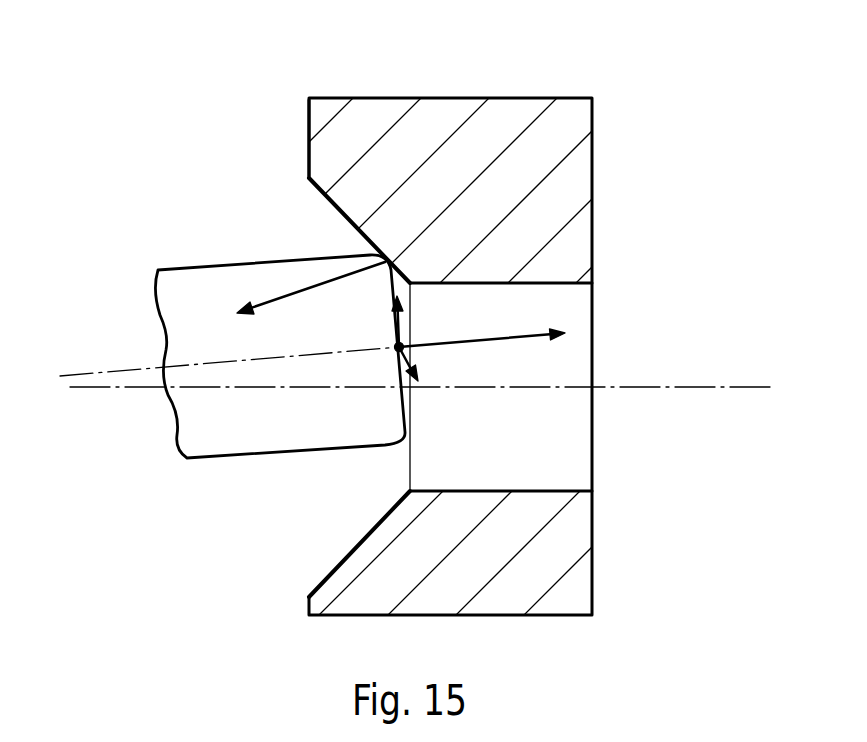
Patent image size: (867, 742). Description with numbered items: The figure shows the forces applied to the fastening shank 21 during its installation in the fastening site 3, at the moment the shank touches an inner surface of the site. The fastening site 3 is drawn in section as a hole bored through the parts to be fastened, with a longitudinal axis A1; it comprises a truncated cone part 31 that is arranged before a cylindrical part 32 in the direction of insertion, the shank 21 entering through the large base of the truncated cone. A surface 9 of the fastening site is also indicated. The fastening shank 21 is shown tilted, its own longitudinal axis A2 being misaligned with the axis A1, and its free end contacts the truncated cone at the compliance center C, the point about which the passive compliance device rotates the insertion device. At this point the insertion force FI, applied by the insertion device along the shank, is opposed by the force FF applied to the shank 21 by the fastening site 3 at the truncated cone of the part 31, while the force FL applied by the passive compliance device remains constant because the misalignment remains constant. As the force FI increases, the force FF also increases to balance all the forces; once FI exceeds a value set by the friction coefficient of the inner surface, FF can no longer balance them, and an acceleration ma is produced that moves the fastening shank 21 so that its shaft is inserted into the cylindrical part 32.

The fastening site 3 is at (593, 470).
The workpiece end face 9 is at (308, 147).
The fastening shank 21 is at (200, 267).
The truncated cone part 31 is at (338, 207).
The cylindrical part 32 is at (565, 284).
The longitudinal axis of the fastening site A1 is at (727, 390).
The longitudinal axis of the blind fastener A2 is at (130, 370).
The compliance center C is at (400, 347).
The force applied by the fastening site FF is at (280, 300).
The force applied by the passive compliance device FL is at (406, 322).
The insertion force FI is at (507, 338).
The acceleration ma is at (410, 358).